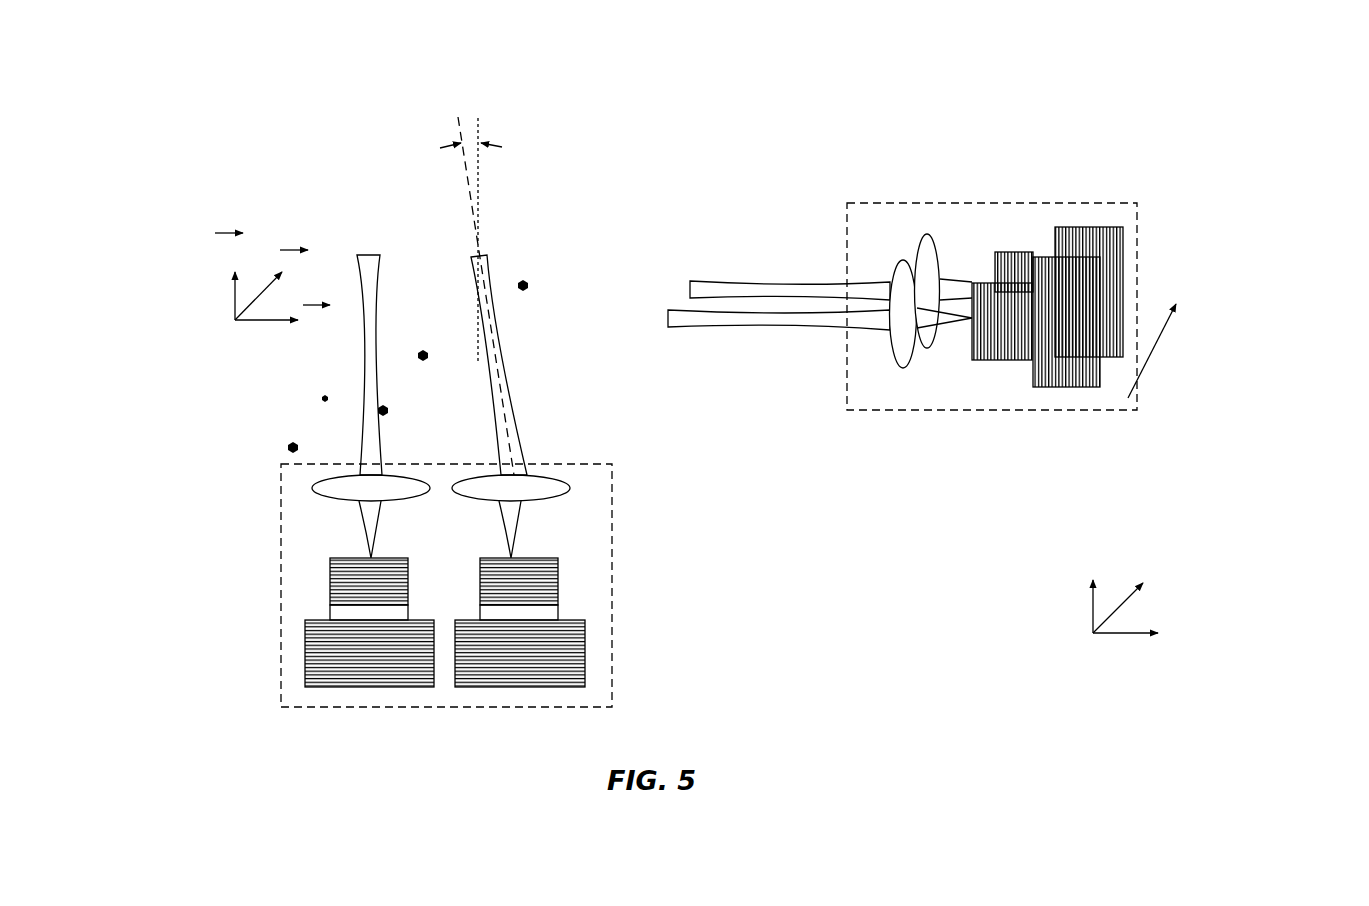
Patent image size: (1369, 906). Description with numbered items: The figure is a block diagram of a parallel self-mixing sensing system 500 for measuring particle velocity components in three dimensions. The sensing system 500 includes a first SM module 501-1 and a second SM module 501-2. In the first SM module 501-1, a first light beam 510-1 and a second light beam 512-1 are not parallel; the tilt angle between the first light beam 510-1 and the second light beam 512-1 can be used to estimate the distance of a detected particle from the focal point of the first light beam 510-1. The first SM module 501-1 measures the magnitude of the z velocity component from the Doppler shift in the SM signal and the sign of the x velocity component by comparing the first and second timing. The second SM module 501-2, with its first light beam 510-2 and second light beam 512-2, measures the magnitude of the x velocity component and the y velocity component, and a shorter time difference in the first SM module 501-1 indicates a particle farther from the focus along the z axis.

The parallel self-mixing sensing system 500 is at (205, 39).
The first light beam 510-1 is at (360, 252).
The second light beam 512-1 is at (483, 253).
The first SM module 501-1 is at (279, 599).
The second light beam 512-2 is at (702, 275).
The first light beam 510-2 is at (684, 332).
The second SM module 501-2 is at (1048, 414).